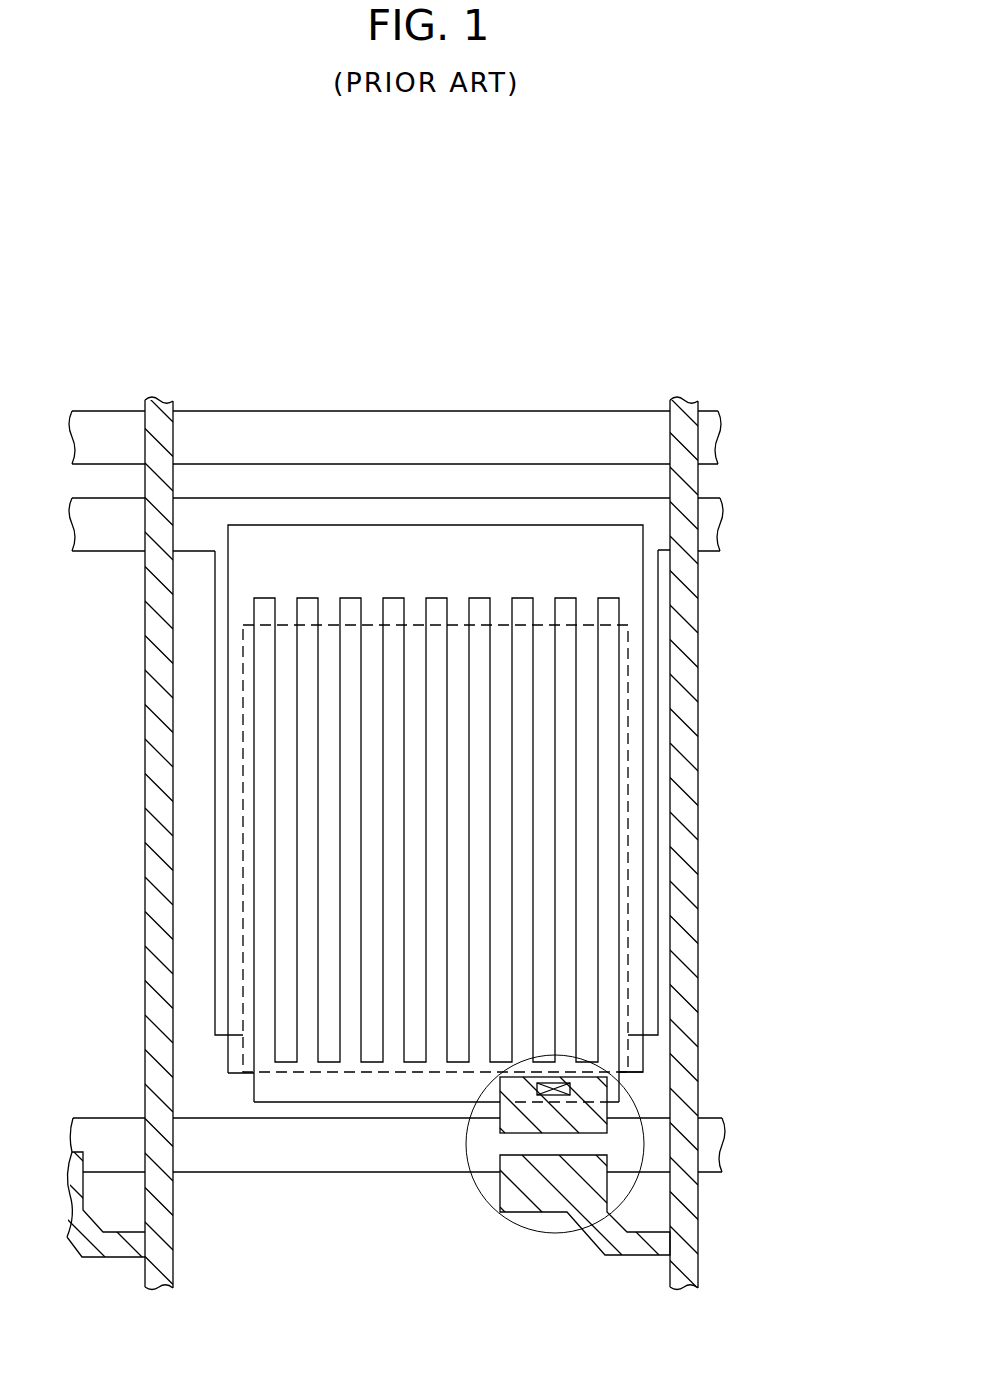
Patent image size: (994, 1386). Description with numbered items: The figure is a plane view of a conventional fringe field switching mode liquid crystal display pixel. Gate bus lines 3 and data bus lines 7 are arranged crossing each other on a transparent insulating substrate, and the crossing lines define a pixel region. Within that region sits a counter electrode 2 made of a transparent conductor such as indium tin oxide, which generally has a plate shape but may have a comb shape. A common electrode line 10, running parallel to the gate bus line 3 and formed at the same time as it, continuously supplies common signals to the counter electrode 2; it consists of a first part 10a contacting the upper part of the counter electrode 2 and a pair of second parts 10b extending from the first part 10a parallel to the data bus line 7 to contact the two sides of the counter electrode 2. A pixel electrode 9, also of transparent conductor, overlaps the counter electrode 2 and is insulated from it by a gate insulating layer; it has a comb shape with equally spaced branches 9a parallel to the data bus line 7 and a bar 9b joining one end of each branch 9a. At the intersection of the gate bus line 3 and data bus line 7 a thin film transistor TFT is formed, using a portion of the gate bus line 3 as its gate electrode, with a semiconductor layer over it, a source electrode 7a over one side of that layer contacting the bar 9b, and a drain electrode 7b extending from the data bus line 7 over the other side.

The counter electrode 2 is at (637, 1053).
The gate bus line 3 is at (712, 450).
The data bus line 7 is at (690, 695).
The source electrode 7a is at (595, 1108).
The drain electrode 7b is at (542, 1192).
The pixel electrode 9 is at (328, 850).
The branches 9a is at (260, 990).
The bar 9b is at (262, 1080).
The common electrode line 10 is at (556, 789).
The first part 10a is at (638, 507).
The second parts 10b is at (648, 647).
The thin film transistor TFT is at (480, 1210).